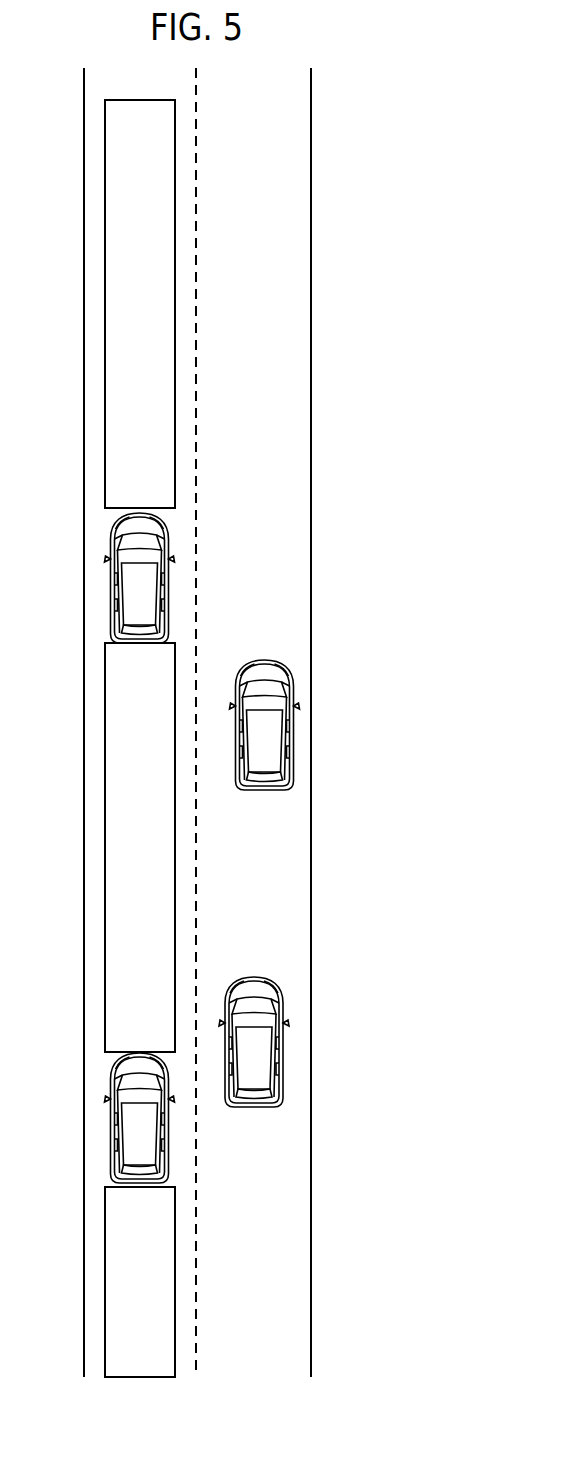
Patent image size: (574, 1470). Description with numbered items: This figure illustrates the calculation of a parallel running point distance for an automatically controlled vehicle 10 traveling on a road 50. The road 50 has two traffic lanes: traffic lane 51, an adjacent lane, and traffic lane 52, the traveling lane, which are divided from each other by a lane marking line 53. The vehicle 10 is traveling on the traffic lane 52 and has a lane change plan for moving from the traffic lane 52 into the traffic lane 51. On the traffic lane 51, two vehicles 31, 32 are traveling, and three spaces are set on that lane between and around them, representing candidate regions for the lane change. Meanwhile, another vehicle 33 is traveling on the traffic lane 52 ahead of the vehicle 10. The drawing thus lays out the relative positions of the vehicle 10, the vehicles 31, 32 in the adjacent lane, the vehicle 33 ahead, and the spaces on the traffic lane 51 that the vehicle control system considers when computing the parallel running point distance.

The vehicle 10 is at (258, 1070).
The vehicle 31 is at (138, 575).
The vehicle 32 is at (145, 1143).
The vehicle 33 is at (265, 727).
The road 50 is at (311, 1262).
The traffic lane 51 is at (158, 94).
The traffic lane 52 is at (262, 94).
The lane marking line 53 is at (196, 313).